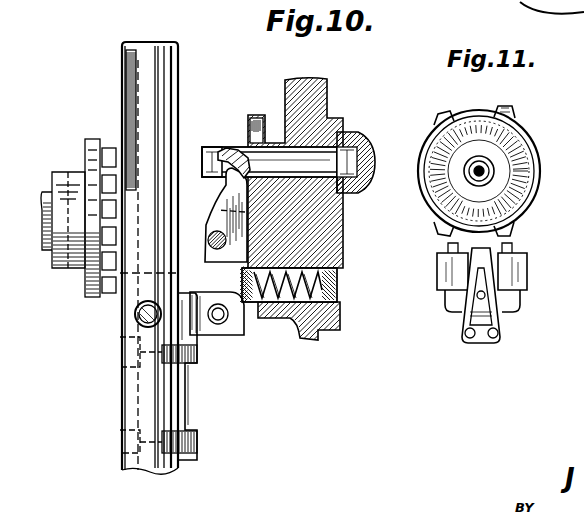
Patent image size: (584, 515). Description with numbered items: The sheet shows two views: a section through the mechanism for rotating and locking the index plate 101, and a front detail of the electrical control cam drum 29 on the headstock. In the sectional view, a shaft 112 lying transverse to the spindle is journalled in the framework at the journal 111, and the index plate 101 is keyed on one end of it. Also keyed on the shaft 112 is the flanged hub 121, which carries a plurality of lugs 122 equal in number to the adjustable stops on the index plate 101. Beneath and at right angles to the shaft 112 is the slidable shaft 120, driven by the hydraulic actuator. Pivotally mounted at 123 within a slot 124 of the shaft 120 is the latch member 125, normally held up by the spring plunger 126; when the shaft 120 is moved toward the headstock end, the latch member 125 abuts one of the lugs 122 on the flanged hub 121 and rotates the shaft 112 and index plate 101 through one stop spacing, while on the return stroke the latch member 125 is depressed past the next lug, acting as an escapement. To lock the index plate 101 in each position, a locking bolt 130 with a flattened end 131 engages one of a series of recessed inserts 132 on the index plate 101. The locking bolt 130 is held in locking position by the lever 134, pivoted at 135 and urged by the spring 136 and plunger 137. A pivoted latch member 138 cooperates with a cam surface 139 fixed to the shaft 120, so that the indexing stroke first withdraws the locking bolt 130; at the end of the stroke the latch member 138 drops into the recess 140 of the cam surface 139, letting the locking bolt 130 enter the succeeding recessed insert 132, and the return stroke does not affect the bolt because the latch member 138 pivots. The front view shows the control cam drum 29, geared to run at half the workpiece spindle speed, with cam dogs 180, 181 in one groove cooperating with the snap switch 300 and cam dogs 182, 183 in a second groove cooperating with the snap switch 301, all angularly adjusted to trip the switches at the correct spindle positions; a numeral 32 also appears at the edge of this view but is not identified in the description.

In FIG. 11, the electrical control cam drum 29 is at (442, 134).
In FIG. 11, the shaft 32 is at (399, 193).
In FIG. 10, the index plate 101 is at (356, 195).
In FIG. 10, the journal 111 is at (322, 96).
In FIG. 10, the shaft 112 is at (42, 200).
In FIG. 10, the shaft 120 is at (160, 95).
In FIG. 10, the flanged hub 121 is at (72, 175).
In FIG. 10, the lugs 122 is at (108, 150).
In FIG. 10, the pivot 123 is at (135, 337).
In FIG. 10, the slot 124 is at (130, 352).
In FIG. 10, the latch member 125 is at (135, 312).
In FIG. 10, the spring plunger 126 is at (135, 85).
In FIG. 10, the locking bolt 130 is at (212, 148).
In FIG. 10, the flattened end 131 is at (352, 134).
In FIG. 10, the recessed inserts 132 is at (364, 178).
In FIG. 10, the lever 134 is at (220, 196).
In FIG. 10, the pivot 135 is at (206, 256).
In FIG. 10, the spring 136 is at (318, 310).
In FIG. 10, the plunger 137 is at (262, 306).
In FIG. 10, the pivoted latch member 138 is at (222, 328).
In FIG. 10, the cam surface 139 is at (185, 352).
In FIG. 10, the recess 140 is at (190, 380).
In FIG. 11, the cam dog 180 is at (440, 230).
In FIG. 11, the cam dog 181 is at (514, 110).
In FIG. 11, the cam dog 182 is at (446, 114).
In FIG. 11, the cam dog 183 is at (512, 236).
In FIG. 11, the snap switch 300 is at (444, 270).
In FIG. 11, the snap switch 301 is at (522, 272).